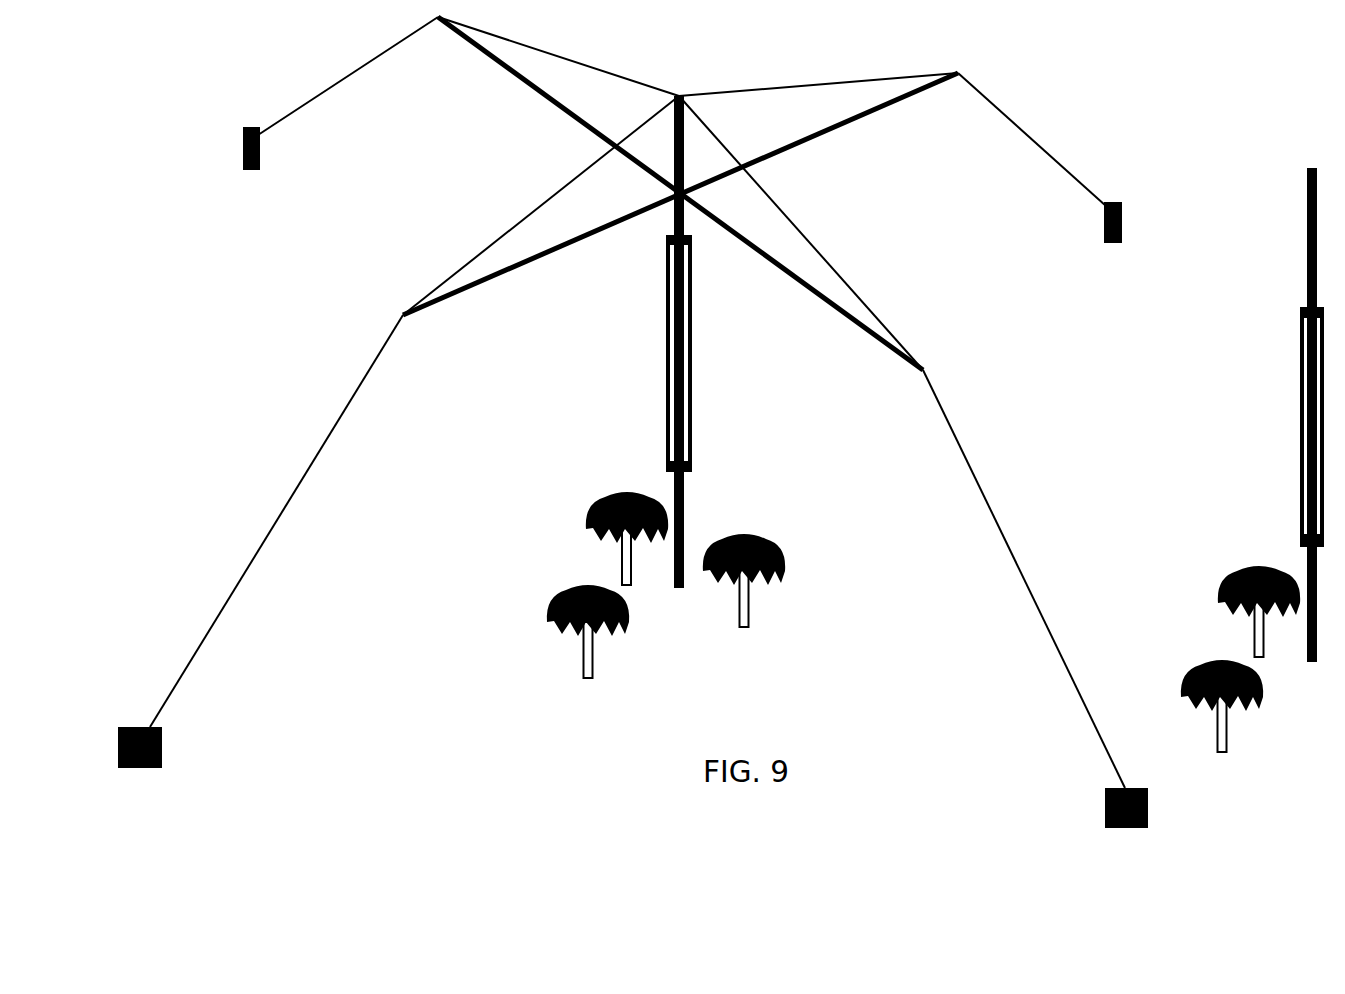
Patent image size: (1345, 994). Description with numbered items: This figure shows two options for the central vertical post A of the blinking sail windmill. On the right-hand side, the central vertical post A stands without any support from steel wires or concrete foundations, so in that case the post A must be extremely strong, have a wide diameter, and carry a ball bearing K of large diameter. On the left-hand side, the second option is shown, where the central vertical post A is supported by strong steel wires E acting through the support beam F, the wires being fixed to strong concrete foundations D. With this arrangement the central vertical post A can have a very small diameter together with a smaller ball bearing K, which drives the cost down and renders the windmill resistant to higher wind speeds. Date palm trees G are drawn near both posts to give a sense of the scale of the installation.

The central vertical post A is at (690, 508).
The concrete foundation D is at (170, 758).
The strong steel wire E is at (238, 593).
The support beam F is at (503, 74).
The date palm tree G is at (572, 643).
The ball bearing K is at (655, 253).